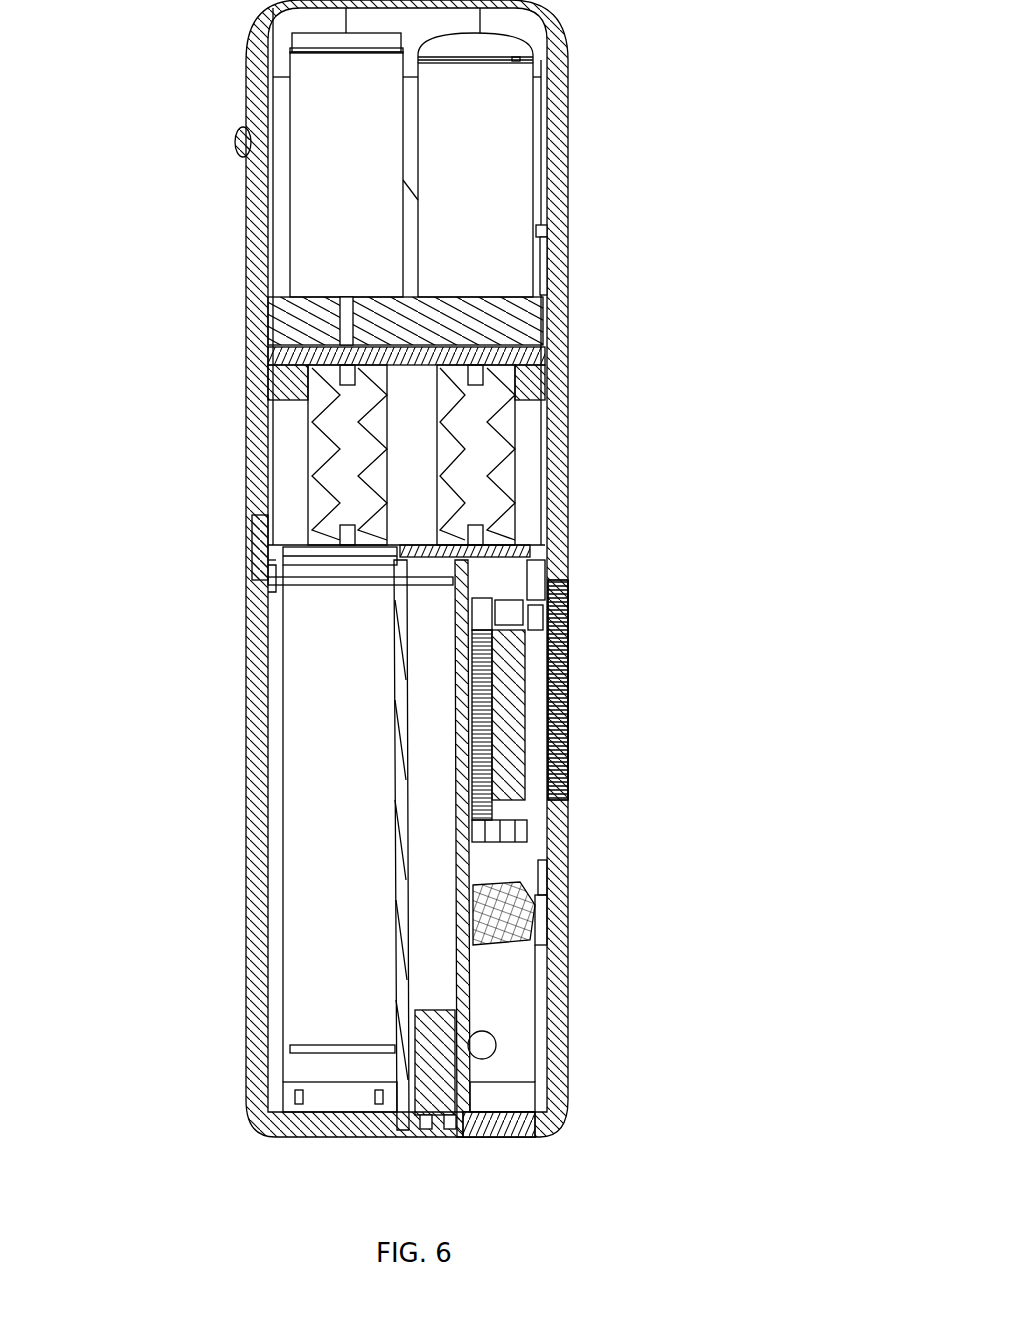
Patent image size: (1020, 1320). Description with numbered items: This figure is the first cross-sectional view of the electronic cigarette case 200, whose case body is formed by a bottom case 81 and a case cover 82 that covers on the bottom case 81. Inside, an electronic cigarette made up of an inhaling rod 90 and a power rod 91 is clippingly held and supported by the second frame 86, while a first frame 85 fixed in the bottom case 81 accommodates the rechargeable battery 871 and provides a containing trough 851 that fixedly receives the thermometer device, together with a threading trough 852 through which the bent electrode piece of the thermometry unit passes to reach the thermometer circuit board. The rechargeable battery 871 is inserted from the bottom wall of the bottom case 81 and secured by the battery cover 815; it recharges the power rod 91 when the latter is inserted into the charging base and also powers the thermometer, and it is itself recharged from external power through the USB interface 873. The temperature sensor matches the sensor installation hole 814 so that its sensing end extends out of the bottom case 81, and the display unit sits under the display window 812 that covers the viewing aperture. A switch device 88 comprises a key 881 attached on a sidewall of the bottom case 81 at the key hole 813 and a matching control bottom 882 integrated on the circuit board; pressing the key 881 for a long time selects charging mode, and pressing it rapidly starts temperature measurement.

The electronic cigarette case 200 is at (250, 435).
The bottom case 81 is at (250, 232).
The case cover 82 is at (565, 118).
The inhaling rod 90 is at (300, 167).
The power rod 91 is at (495, 160).
The second frame 86 is at (530, 322).
The sensor installation hole 814 is at (272, 552).
The threading trough 852 is at (283, 608).
The containing trough 851 is at (430, 625).
The first frame 85 is at (394, 656).
The rechargeable battery 871 is at (310, 690).
The display window 812 is at (555, 752).
The key hole 813 is at (540, 885).
The control bottom 882 is at (545, 905).
The key 881 is at (548, 940).
The switch device 88 is at (736, 903).
The USB interface 873 is at (450, 1137).
The battery cover 815 is at (325, 1137).